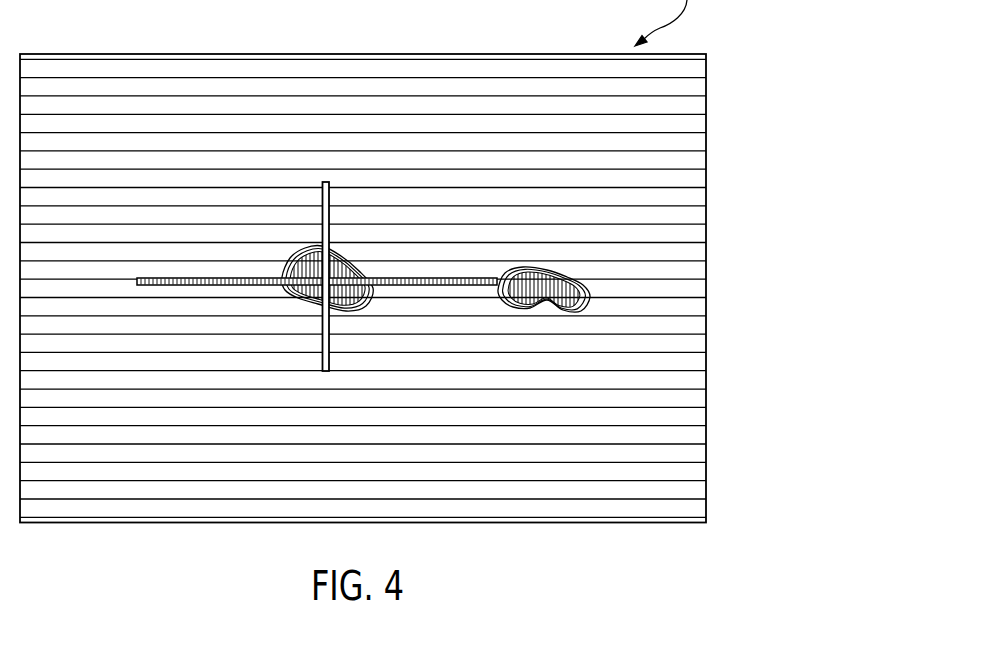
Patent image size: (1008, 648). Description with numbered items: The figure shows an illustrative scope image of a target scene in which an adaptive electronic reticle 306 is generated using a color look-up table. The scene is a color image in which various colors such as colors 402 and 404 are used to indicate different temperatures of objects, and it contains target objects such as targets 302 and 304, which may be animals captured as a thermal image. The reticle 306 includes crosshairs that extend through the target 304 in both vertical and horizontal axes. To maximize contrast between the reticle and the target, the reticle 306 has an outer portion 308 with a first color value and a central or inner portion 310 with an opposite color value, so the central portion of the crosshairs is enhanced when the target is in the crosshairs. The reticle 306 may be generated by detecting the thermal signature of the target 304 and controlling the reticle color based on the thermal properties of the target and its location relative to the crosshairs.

The target 302 is at (542, 300).
The target 304 is at (357, 307).
The adaptive electronic reticle 306 is at (325, 371).
The outer portion 308 is at (177, 285).
The inner portion 310 is at (302, 303).
The color 402 is at (585, 278).
The color 404 is at (583, 295).